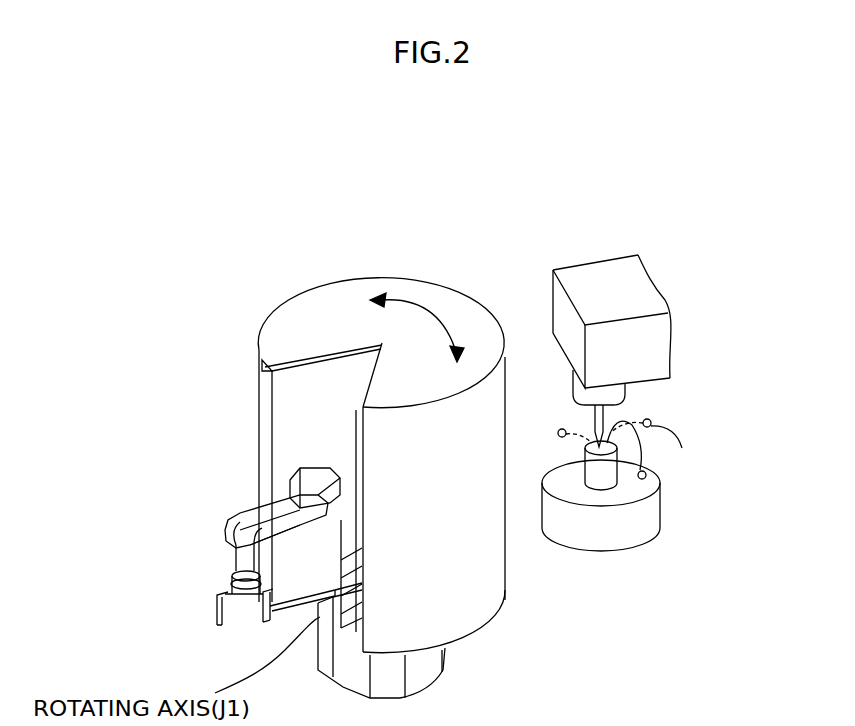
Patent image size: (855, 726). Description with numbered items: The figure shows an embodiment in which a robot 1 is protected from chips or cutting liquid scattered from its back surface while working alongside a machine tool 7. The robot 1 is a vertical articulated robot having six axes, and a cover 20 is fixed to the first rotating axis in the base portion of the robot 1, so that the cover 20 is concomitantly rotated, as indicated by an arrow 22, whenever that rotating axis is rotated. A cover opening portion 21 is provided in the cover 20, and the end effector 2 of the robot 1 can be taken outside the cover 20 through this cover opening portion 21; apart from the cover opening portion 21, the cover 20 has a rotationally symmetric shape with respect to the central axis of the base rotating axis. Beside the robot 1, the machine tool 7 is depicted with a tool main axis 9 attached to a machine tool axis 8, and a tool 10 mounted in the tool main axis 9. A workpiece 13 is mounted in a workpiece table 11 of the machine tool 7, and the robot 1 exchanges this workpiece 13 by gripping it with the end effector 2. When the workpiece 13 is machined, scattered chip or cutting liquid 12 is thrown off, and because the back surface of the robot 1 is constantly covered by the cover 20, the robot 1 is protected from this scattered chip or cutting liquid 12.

The robot 1 is at (237, 520).
The end effector 2 is at (217, 612).
The machine tool 7 is at (707, 313).
The machine tool axis 8 is at (598, 272).
The tool main axis 9 is at (628, 390).
The tool 10 is at (608, 415).
The workpiece table 11 is at (615, 540).
The scattered chip or cutting liquid 12 is at (645, 449).
The workpiece 13 is at (608, 478).
The cover 20 is at (460, 608).
The cover opening portion 21 is at (313, 377).
The arrow 22 is at (430, 305).